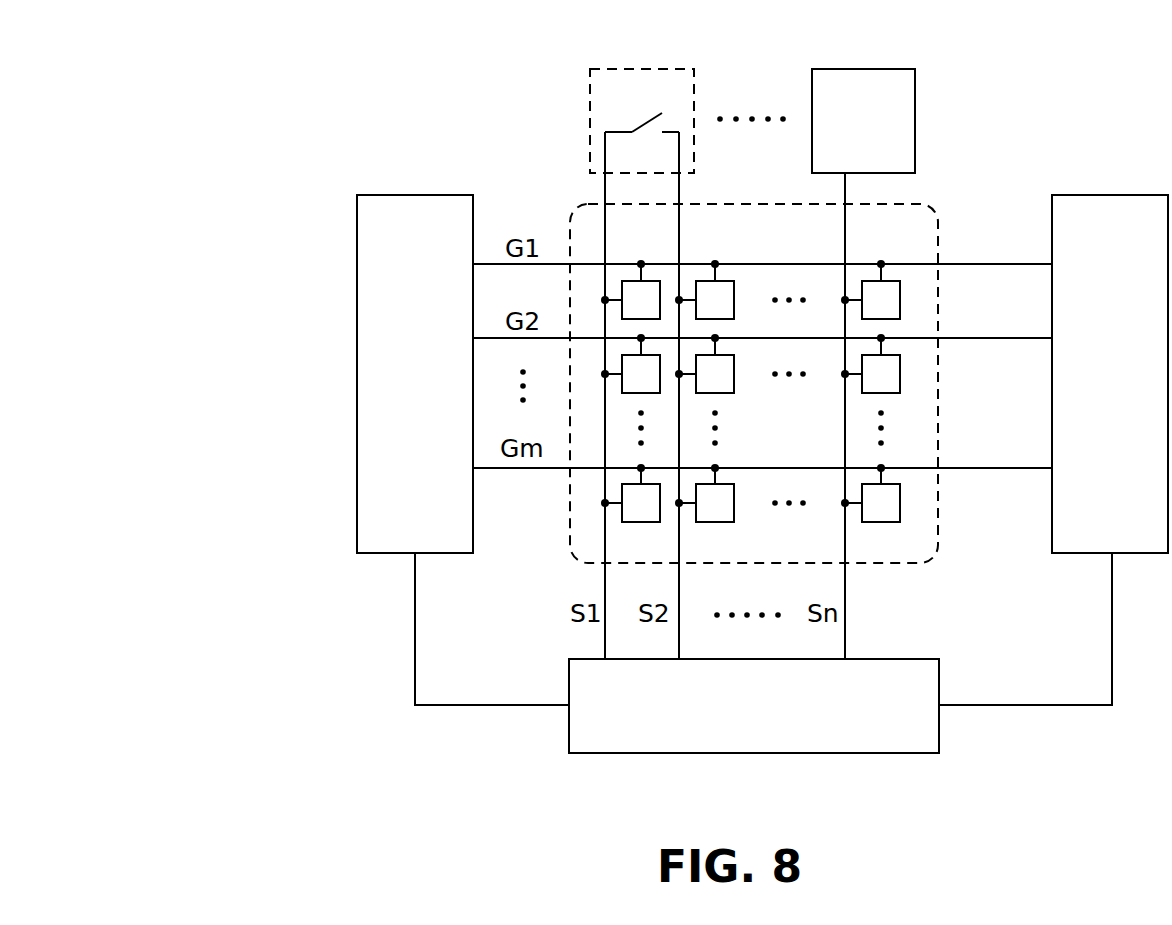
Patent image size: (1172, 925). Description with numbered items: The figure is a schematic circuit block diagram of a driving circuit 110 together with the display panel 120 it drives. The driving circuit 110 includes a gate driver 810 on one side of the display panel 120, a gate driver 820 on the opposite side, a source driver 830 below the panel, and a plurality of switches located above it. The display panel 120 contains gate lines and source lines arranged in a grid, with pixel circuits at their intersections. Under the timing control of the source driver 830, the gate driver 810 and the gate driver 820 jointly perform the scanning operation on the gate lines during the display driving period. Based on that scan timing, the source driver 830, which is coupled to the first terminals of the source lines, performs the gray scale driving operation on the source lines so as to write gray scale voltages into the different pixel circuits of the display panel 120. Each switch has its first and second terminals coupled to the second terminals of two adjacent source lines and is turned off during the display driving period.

The driving circuit 110 is at (135, 682).
The display panel 120 is at (584, 203).
The gate driver 810 is at (415, 195).
The gate driver 820 is at (1112, 195).
The source driver 830 is at (755, 753).